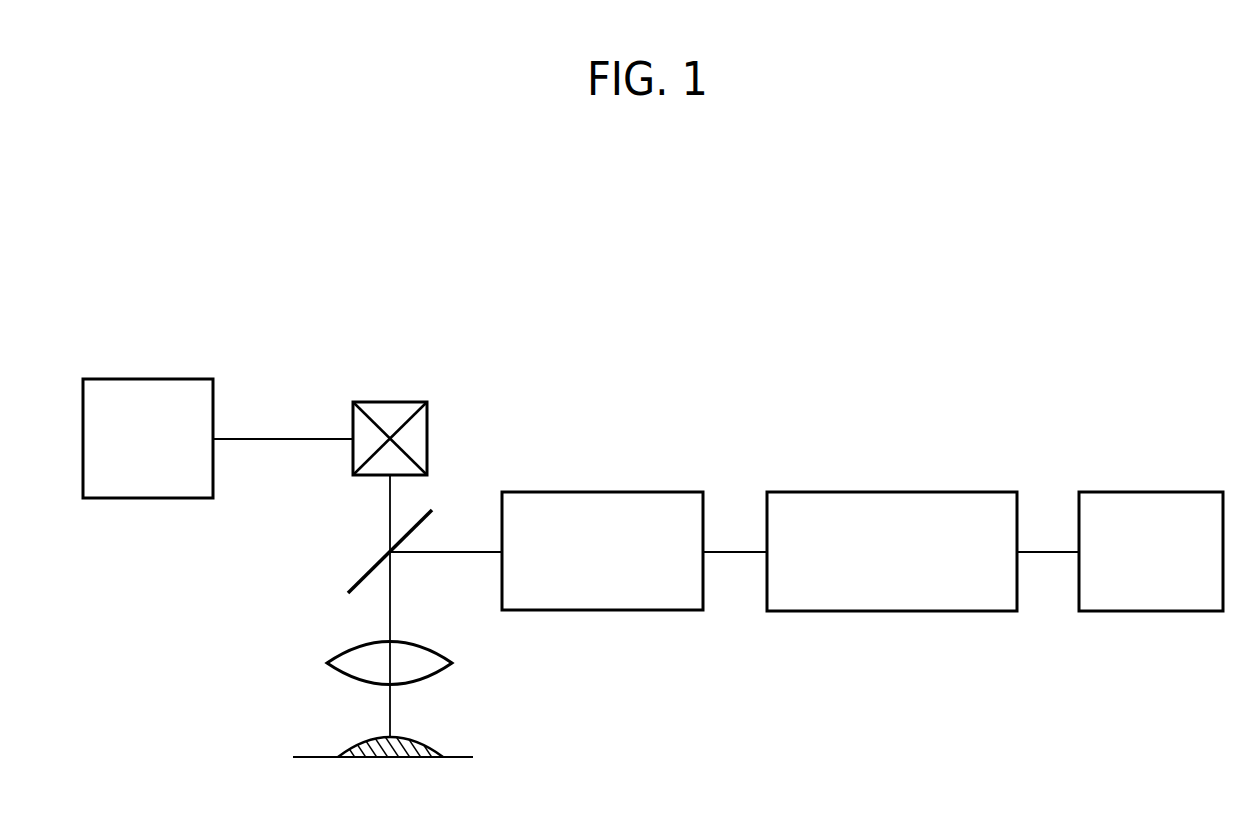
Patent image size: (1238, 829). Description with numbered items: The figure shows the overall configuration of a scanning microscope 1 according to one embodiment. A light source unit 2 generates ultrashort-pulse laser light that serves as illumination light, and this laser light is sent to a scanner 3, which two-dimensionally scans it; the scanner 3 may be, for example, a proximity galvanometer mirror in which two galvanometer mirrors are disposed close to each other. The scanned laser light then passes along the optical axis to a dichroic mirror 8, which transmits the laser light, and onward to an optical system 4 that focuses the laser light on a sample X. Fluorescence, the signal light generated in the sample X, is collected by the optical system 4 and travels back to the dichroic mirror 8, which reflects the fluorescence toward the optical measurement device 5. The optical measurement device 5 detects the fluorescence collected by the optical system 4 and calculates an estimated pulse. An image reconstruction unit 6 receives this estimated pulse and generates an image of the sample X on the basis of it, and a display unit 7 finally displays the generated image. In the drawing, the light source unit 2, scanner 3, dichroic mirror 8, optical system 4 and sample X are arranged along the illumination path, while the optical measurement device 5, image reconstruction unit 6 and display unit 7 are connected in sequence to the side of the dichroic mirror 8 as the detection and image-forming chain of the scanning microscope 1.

The scanning microscope 1 is at (733, 343).
The light source unit 2 is at (150, 378).
The scanner 3 is at (387, 402).
The optical system 4 is at (338, 655).
The optical measurement device 5 is at (595, 491).
The image reconstruction unit 6 is at (880, 491).
The display unit 7 is at (1150, 491).
The dichroic mirror 8 is at (362, 578).
The sample X is at (350, 747).